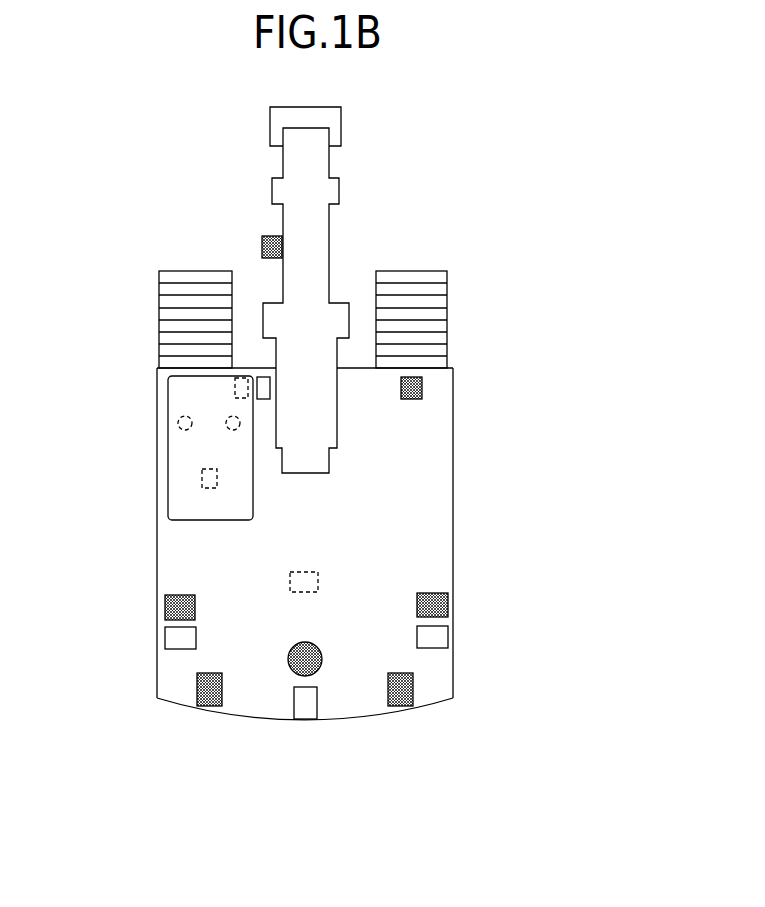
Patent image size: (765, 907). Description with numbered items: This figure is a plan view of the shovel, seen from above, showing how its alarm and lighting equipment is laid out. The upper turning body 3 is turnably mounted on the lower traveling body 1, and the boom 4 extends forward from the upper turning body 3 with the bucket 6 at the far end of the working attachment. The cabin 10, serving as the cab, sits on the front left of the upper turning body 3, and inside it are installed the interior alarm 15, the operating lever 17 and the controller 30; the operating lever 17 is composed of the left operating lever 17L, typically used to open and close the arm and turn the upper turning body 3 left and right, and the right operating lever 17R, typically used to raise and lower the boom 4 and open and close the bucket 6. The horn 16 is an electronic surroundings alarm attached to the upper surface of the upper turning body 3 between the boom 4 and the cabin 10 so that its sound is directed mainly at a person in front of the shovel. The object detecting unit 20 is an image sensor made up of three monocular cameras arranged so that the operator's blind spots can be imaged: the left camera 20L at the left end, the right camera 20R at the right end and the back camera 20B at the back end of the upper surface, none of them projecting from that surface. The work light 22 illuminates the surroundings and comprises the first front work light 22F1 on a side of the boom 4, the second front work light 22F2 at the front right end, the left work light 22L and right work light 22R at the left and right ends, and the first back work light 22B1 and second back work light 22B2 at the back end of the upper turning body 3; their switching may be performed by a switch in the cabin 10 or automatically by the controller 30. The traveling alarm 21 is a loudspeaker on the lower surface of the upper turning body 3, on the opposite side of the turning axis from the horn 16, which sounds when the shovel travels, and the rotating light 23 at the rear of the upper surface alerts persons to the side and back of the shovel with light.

The lower traveling body 1 is at (438, 315).
The upper turning body 3 is at (440, 456).
The boom 4 is at (318, 224).
The bucket 6 is at (332, 124).
The cabin 10 is at (192, 521).
The interior alarm 15 is at (235, 388).
The horn 16 is at (264, 376).
The operating lever 17 is at (132, 442).
The left operating lever 17L is at (178, 423).
The right operating lever 17R is at (232, 430).
The object detecting unit 20 is at (310, 716).
The left camera 20L is at (168, 637).
The right camera 20R is at (440, 636).
The back camera 20B is at (305, 719).
The traveling alarm 21 is at (307, 572).
The work light 22 is at (326, 506).
The first front work light 22F1 is at (263, 247).
The second front work light 22F2 is at (423, 386).
The left work light 22L is at (167, 607).
The right work light 22R is at (437, 605).
The first back work light 22B1 is at (210, 706).
The second back work light 22B2 is at (400, 706).
The rotating light 23 is at (322, 655).
The controller 30 is at (202, 479).